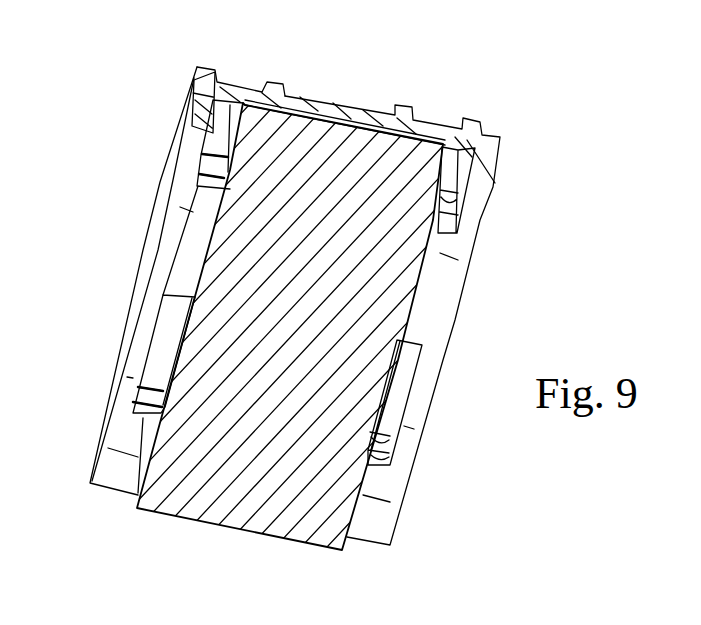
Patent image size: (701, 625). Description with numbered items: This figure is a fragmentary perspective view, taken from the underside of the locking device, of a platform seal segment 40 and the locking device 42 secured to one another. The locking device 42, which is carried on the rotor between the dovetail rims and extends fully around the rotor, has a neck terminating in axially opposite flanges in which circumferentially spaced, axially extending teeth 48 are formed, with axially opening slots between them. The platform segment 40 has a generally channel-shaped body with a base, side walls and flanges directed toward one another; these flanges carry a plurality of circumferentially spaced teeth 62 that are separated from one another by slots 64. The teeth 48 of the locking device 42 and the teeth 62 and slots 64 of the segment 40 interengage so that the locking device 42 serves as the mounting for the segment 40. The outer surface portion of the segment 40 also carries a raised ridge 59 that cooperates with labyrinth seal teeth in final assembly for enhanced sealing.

The platform seal segment 40 is at (457, 333).
The locking device 42 is at (360, 137).
The teeth 48 is at (218, 167).
The raised ridge 59 is at (279, 82).
The teeth 62 is at (190, 253).
The slots 64 is at (158, 358).